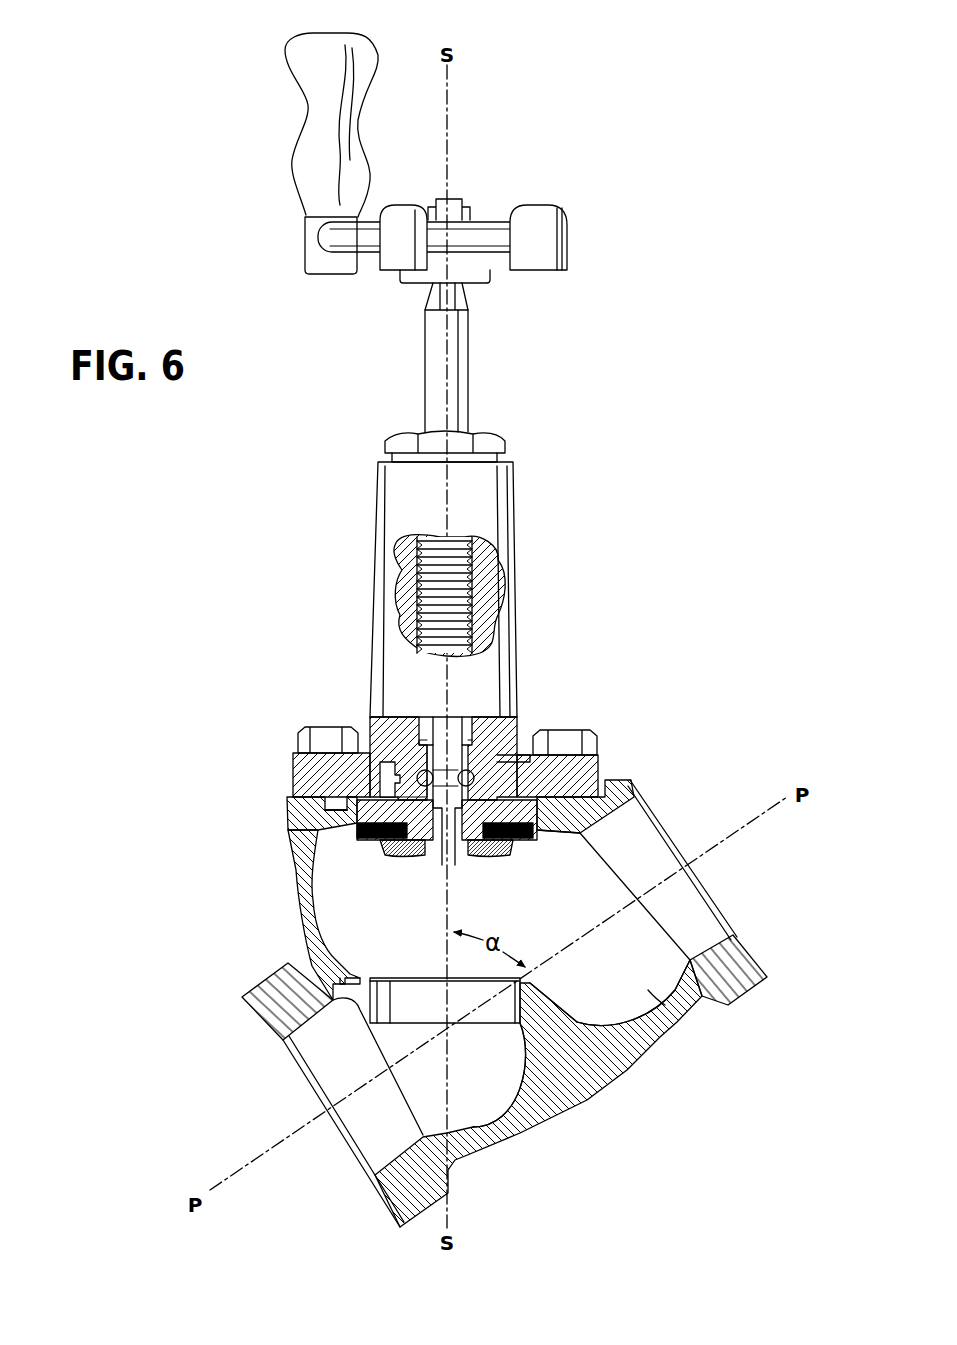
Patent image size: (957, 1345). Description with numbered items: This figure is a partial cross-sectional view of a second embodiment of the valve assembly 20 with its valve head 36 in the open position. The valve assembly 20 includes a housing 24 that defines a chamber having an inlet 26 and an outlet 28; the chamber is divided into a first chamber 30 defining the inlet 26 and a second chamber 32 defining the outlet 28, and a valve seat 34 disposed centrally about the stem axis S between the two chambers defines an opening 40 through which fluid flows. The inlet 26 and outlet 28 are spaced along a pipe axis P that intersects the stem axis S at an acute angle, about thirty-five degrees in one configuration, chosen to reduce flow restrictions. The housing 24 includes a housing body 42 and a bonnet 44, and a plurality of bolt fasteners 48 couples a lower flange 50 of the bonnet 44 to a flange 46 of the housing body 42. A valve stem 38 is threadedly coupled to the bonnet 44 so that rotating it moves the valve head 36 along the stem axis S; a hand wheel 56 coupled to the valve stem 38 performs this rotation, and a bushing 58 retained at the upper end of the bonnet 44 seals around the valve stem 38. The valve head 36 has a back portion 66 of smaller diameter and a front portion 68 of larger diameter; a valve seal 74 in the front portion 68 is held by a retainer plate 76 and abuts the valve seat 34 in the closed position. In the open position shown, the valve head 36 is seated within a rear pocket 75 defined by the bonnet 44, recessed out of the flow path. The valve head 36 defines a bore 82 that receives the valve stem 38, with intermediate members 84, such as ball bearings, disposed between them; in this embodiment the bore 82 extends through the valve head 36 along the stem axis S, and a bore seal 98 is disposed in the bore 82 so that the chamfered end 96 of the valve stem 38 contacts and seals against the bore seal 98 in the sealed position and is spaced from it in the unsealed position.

The valve assembly 20 is at (625, 656).
The housing 24 is at (652, 1087).
The inlet 26 is at (318, 1073).
The outlet 28 is at (685, 893).
The first chamber 30 is at (520, 1132).
The second chamber 32 is at (667, 1005).
The valve seat 34 is at (362, 978).
The valve head 36 is at (545, 815).
The valve stem 38 is at (460, 387).
The opening 40 is at (480, 998).
The housing body 42 is at (578, 1100).
The bonnet 44 is at (500, 518).
The flange 46 is at (590, 772).
The bolt fasteners 48 is at (338, 728).
The lower flange 50 is at (297, 785).
The hand wheel 56 is at (550, 235).
The bushing 58 is at (493, 443).
The back portion 66 is at (403, 757).
The front portion 68 is at (337, 833).
The valve seal 74 is at (365, 838).
The rear pocket 75 is at (382, 777).
The retainer plate 76 is at (480, 855).
The bore 82 is at (443, 862).
The intermediate members 84 is at (470, 770).
The end 96 is at (523, 758).
The bore seal 98 is at (410, 857).